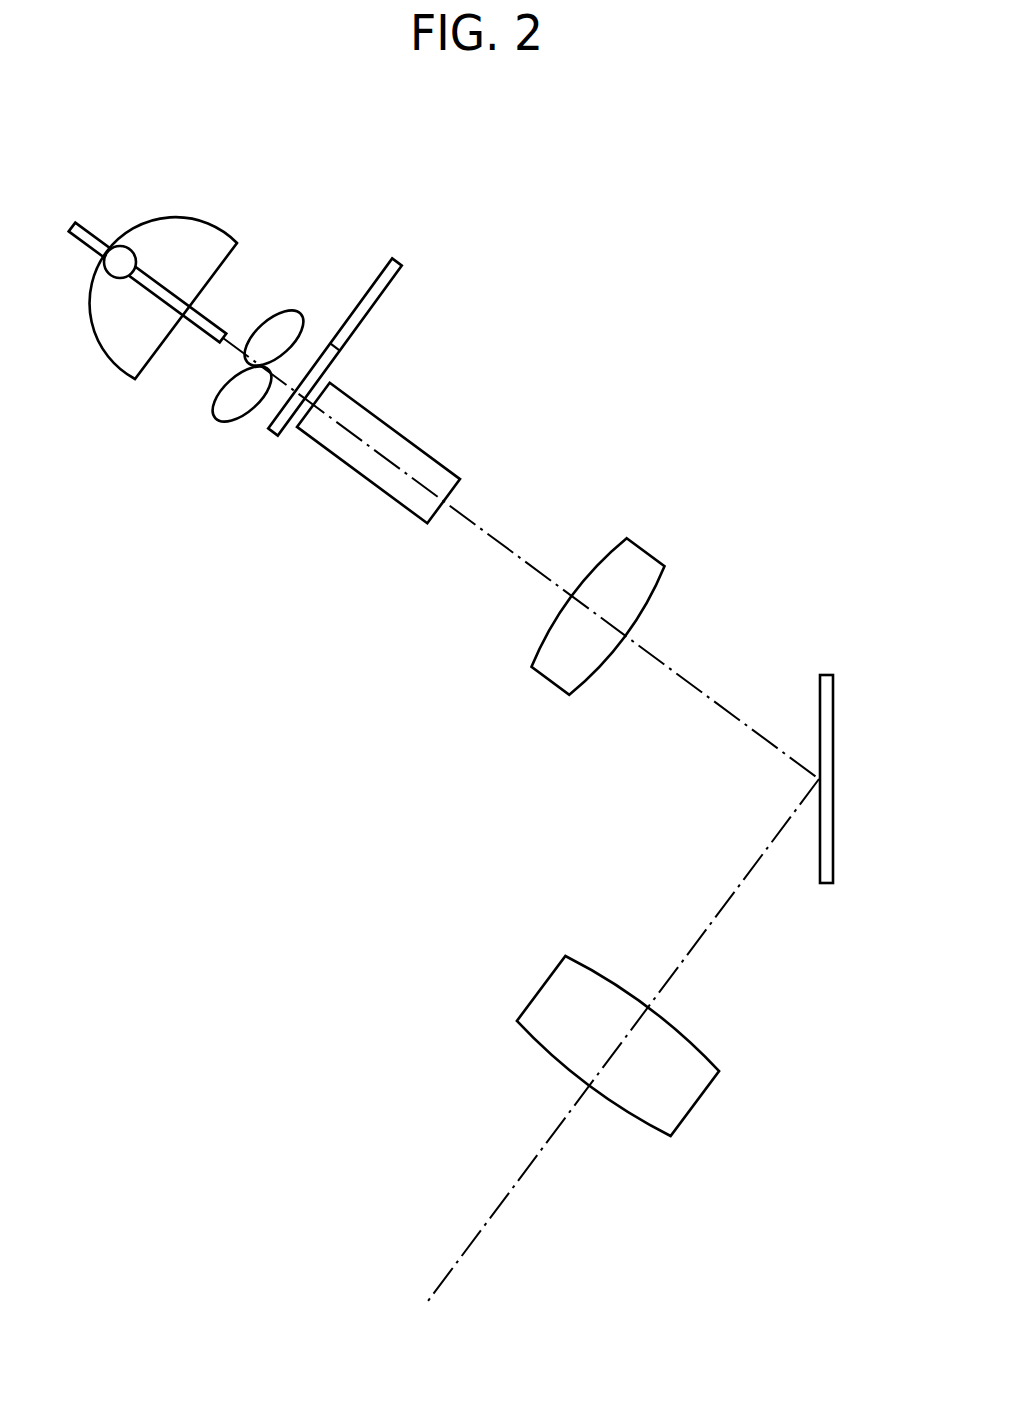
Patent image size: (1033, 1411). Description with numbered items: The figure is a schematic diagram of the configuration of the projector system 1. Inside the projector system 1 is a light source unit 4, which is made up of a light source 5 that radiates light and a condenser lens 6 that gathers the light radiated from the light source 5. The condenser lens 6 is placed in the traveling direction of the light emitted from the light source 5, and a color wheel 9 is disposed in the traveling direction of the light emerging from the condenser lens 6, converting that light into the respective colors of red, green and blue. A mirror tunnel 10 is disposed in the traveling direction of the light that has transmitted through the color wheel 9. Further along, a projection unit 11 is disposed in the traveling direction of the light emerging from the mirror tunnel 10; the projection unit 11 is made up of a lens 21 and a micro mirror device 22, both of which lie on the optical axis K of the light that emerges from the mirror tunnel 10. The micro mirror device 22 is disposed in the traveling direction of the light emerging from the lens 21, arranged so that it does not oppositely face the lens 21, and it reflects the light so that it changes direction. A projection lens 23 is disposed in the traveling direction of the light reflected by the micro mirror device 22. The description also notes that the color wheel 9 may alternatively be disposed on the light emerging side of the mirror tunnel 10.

The projector system 1 is at (690, 198).
The light source unit 4 is at (342, 212).
The light source 5 is at (207, 222).
The condenser lens 6 is at (300, 310).
The color wheel 9 is at (397, 260).
The mirror tunnel 10 is at (414, 445).
The projection unit 11 is at (838, 581).
The lens 21 is at (650, 556).
The micro mirror device 22 is at (822, 675).
The projection lens 23 is at (696, 1103).
The optical axis K is at (476, 525).